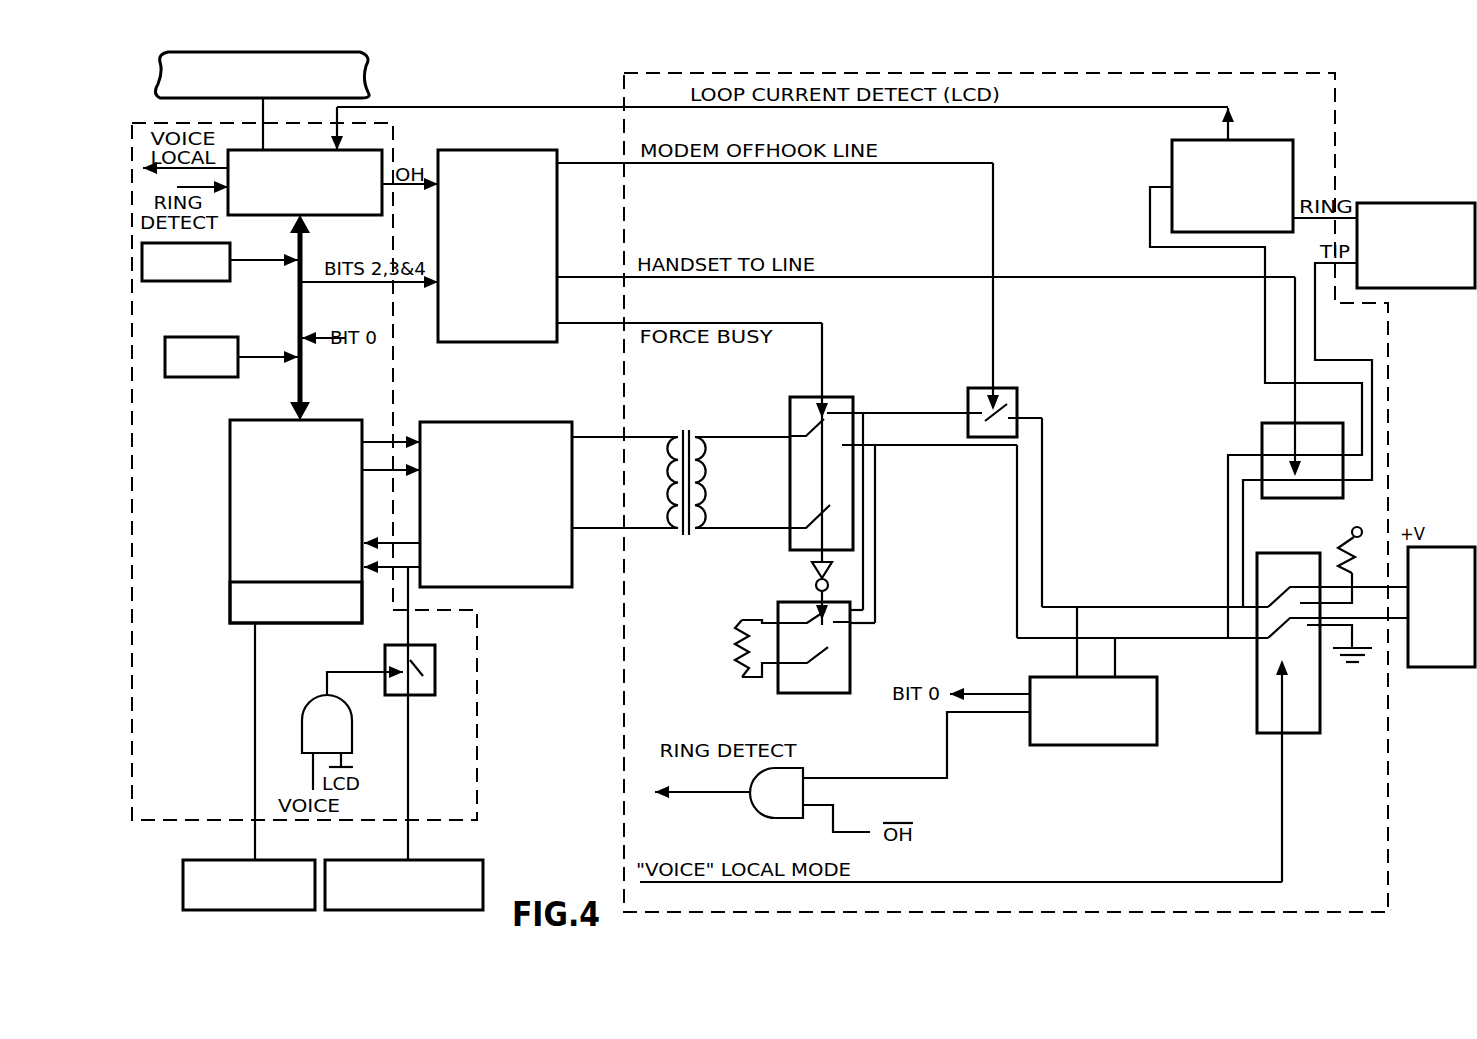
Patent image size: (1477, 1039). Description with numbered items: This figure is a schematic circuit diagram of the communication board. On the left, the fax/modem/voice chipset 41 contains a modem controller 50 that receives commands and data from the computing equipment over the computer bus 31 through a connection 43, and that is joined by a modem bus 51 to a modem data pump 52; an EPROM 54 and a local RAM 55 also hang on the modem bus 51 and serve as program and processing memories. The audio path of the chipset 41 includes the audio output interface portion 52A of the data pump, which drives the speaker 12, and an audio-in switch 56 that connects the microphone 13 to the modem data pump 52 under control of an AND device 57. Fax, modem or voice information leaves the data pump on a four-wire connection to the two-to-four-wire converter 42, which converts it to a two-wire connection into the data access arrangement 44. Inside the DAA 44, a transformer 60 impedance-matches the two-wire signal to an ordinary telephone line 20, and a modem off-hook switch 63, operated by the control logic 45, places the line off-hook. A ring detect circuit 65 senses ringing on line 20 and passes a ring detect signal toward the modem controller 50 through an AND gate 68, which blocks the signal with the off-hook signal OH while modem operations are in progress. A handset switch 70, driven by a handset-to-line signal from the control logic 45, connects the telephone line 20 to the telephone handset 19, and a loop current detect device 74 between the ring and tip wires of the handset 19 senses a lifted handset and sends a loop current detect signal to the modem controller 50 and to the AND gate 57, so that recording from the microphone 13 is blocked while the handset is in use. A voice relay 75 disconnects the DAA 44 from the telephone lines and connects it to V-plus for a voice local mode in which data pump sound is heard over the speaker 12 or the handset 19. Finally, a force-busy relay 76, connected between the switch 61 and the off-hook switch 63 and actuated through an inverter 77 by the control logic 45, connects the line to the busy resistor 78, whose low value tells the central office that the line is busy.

The computer bus 31 is at (165, 95).
The bus connection 43 is at (260, 116).
The fax/modem/voice chipset 41 is at (185, 834).
The modem controller 50 is at (325, 218).
The modem bus 51 is at (297, 306).
The EPROM 54 is at (190, 282).
The local RAM 55 is at (200, 378).
The modem data pump 52 is at (240, 468).
The audio output interface portion 52A is at (240, 610).
The 2/4 converter 42 is at (503, 590).
The transformer 60 is at (684, 432).
The control logic 45 is at (455, 343).
The data access arrangement 44 is at (620, 762).
The switch 61 is at (790, 413).
The inverter 77 is at (810, 576).
The relay 76 is at (818, 697).
The resistor R1 78 is at (737, 670).
The modem off-hook switch 63 is at (1018, 396).
The ring detect circuit 65 is at (1043, 676).
The AND gate 68 is at (768, 818).
The voice relay 75 is at (1257, 720).
The telephone line 20 is at (1437, 547).
The handset switch 70 is at (1262, 440).
The loop current detect device 74 is at (1172, 168).
The telephone handset 19 is at (1400, 203).
The audio-in switch 56 is at (385, 661).
The AND gate 57 is at (304, 703).
The speaker 12 is at (288, 860).
The microphone 13 is at (485, 888).